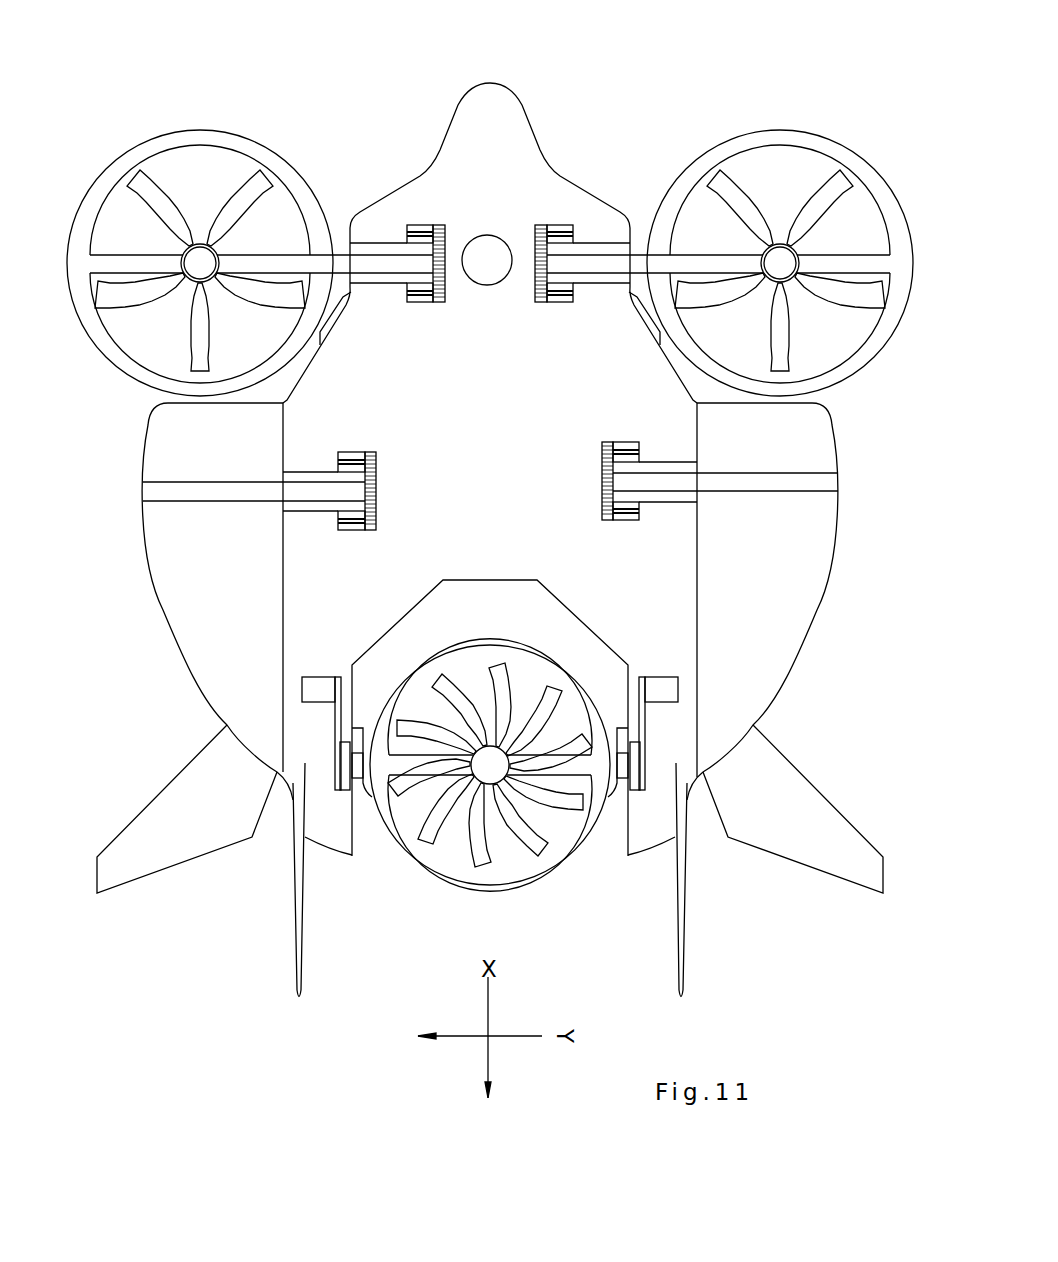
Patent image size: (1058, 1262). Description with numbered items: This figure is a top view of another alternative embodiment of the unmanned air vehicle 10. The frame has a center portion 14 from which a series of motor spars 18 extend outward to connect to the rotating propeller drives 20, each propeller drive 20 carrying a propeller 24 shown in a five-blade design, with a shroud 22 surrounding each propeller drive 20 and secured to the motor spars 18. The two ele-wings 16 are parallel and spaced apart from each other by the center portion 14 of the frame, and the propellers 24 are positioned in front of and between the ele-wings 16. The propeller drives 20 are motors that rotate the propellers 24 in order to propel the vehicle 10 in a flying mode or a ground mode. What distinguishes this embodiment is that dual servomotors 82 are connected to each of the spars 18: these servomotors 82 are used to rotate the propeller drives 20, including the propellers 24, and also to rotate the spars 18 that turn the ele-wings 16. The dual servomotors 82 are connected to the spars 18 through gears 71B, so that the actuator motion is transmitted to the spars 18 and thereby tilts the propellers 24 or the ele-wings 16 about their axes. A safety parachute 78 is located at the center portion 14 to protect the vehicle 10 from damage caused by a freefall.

The vehicle 10 is at (246, 66).
The center portion 14 is at (478, 93).
The ele-wings 16 is at (203, 607).
The motor spars 18 is at (332, 253).
The rotating propeller drives 20 is at (193, 273).
The shroud 22 is at (117, 175).
The propellers 24 is at (108, 298).
The gears 71B is at (532, 230).
The safety parachute 78 is at (500, 272).
The dual servomotors 82 is at (423, 300).